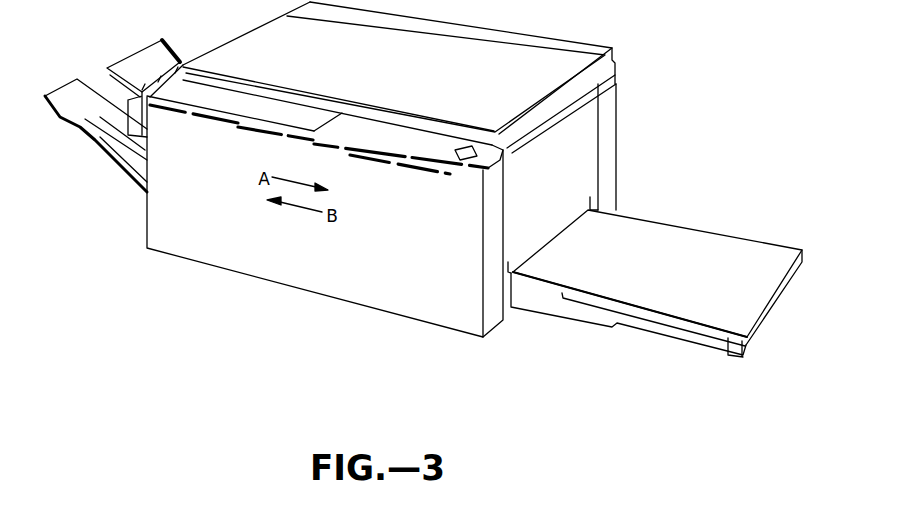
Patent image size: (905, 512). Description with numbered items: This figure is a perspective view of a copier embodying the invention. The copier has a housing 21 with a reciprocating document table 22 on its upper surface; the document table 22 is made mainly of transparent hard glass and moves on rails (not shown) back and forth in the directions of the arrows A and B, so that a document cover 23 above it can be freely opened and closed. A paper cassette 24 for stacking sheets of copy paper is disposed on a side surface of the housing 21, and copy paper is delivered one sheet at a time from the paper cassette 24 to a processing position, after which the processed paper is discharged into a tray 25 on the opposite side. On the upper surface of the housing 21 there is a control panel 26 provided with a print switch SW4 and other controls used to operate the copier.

The housing 21 is at (617, 154).
The document table 22 is at (614, 64).
The document cover 23 is at (567, 67).
The paper cassette 24 is at (742, 233).
The tray 25 is at (62, 117).
The control panel 26 is at (438, 152).
The print switch SW4 is at (459, 160).